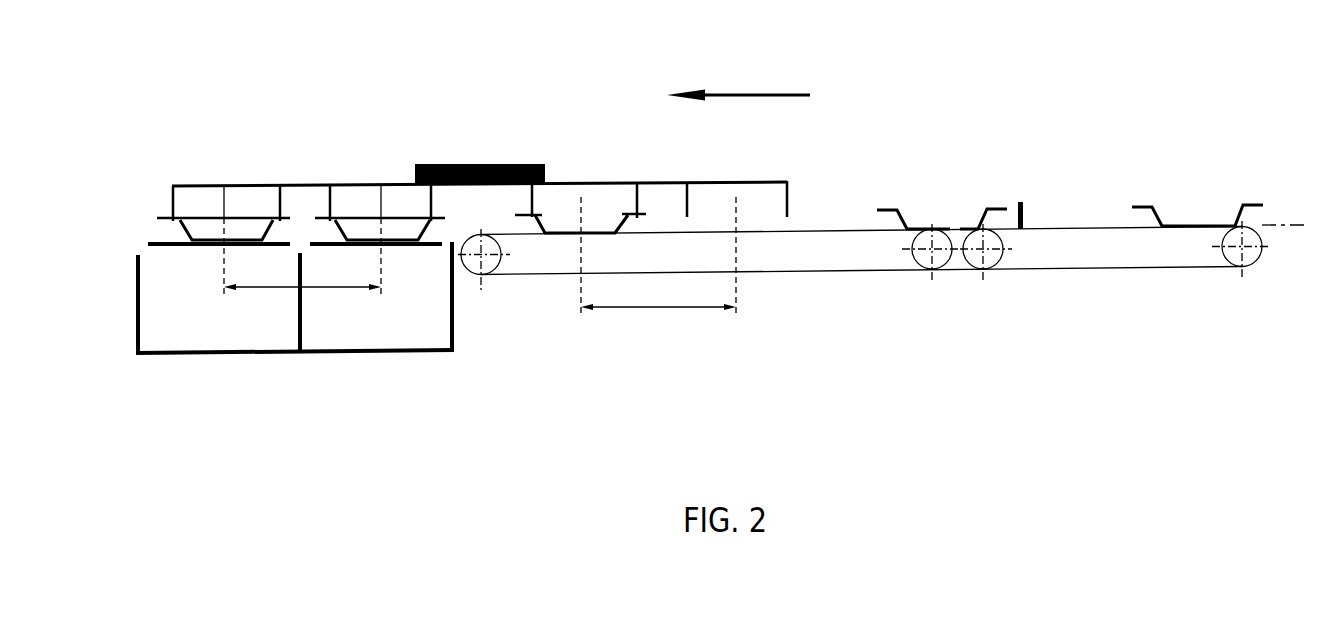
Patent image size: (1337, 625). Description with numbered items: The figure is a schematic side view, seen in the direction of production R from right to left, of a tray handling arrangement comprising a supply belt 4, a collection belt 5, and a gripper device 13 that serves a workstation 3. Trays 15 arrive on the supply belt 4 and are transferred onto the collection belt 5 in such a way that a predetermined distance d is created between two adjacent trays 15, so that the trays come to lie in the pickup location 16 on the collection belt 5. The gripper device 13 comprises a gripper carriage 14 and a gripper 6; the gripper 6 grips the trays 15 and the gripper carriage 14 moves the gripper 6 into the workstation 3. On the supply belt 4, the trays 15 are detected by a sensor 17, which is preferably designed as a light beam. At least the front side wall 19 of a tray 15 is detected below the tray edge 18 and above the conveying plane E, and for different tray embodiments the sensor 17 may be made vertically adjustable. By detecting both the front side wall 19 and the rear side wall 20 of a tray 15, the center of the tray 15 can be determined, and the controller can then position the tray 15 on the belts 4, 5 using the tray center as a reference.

The workstation 3 is at (323, 369).
The supply belt 4 is at (1070, 228).
The collection belt 5 is at (860, 230).
The gripper 6 is at (363, 184).
The gripper device 13 is at (472, 163).
The gripper carriage 14 is at (485, 164).
The tray 15 is at (1190, 225).
The pickup location 16 is at (646, 325).
The sensor 17 is at (1024, 203).
The tray edge 18 is at (1135, 207).
The front side wall 19 is at (902, 208).
The rear side wall 20 is at (980, 208).
The direction of production R is at (753, 90).
The conveying plane E is at (1274, 228).